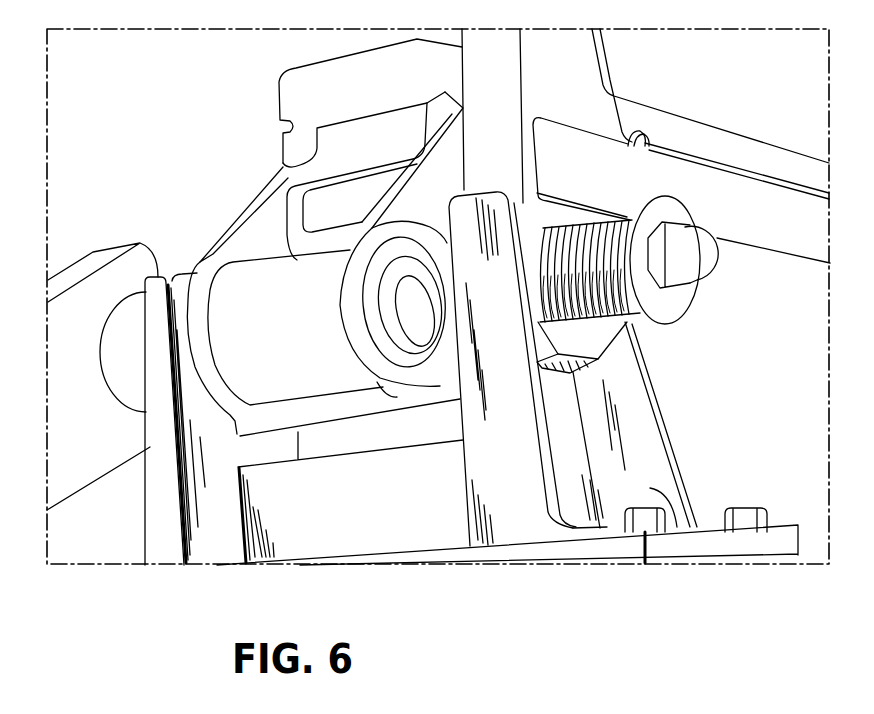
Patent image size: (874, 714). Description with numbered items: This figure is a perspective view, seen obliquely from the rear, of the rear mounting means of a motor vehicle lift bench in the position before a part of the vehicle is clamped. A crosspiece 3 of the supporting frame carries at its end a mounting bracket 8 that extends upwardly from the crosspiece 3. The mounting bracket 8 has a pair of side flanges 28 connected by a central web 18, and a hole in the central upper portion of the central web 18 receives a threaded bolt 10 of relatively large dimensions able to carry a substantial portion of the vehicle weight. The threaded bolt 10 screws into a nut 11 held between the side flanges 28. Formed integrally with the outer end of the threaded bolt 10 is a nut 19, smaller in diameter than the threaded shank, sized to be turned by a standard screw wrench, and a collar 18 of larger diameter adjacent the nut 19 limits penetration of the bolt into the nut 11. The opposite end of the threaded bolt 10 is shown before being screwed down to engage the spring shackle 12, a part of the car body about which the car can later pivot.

The crosspiece 3 is at (743, 540).
The mounting bracket 8 is at (690, 473).
The threaded bolt 10 is at (690, 302).
The nut 11 is at (580, 350).
The spring shackle 12 is at (412, 388).
The central web 18 is at (585, 600).
The nut 19 is at (697, 256).
The side flanges 28 is at (678, 600).